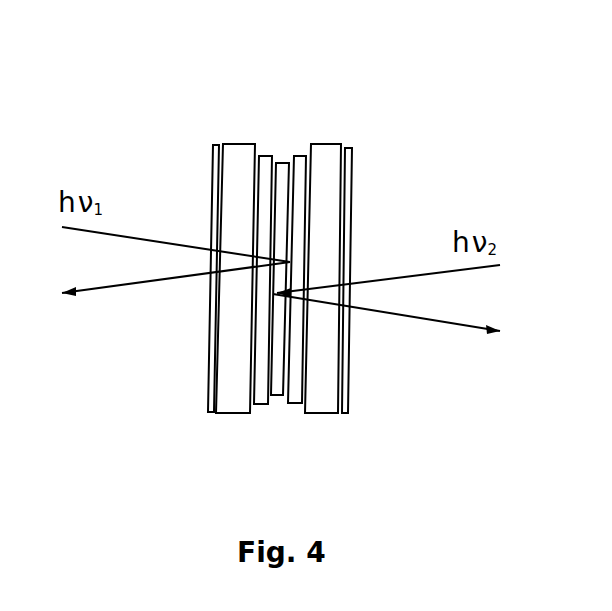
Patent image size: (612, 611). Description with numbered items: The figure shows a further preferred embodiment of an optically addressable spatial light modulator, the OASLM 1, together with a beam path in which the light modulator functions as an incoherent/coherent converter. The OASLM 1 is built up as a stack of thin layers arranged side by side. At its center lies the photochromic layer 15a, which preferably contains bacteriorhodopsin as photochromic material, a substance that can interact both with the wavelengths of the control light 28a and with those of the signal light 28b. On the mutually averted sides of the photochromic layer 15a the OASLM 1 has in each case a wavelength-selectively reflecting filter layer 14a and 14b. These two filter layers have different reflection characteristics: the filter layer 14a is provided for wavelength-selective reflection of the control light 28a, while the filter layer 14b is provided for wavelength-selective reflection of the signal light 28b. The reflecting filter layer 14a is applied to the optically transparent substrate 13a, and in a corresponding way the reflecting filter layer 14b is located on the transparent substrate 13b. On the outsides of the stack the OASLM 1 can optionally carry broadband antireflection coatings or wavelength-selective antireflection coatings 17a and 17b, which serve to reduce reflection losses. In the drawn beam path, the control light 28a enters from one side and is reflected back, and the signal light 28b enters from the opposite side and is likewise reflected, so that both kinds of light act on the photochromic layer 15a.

The OASLM 1 is at (190, 380).
The optically transparent substrate 13a is at (332, 140).
The transparent substrate 13b is at (235, 142).
The wavelength-selectively reflecting filter layer 14a is at (298, 148).
The wavelength-selectively reflecting filter layer 14b is at (267, 145).
The photochromic layer 15a is at (283, 150).
The antireflection coating 17a is at (358, 168).
The antireflection coating 17b is at (207, 172).
The control light 28a is at (138, 292).
The signal light 28b is at (418, 330).